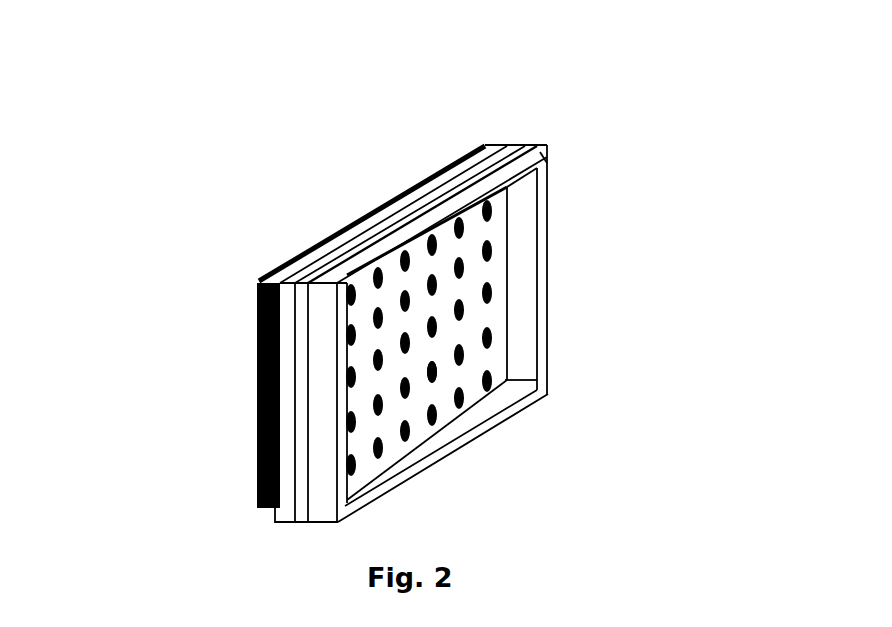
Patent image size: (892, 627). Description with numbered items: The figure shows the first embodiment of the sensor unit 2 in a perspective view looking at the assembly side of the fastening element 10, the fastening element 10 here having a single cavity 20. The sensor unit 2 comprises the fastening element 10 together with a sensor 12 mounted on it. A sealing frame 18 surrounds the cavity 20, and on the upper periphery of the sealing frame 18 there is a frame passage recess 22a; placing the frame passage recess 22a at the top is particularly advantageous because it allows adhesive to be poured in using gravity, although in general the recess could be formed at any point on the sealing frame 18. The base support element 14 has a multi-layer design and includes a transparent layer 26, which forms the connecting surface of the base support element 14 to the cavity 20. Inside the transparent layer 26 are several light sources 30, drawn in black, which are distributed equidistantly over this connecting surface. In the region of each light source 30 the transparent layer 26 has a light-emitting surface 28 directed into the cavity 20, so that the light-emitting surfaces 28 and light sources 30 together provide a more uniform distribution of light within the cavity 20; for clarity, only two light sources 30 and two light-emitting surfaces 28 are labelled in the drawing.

The sensor unit 2 is at (408, 350).
The fastening element 10 is at (293, 536).
The sensor 12 is at (256, 327).
The base support element 14 is at (294, 389).
The sealing frame 18 is at (522, 197).
The cavity 20 is at (478, 270).
The frame passage recess 22a is at (544, 158).
The transparent layer 26 is at (294, 503).
The light-emitting surface 28 is at (472, 355).
The light source 30 is at (442, 371).